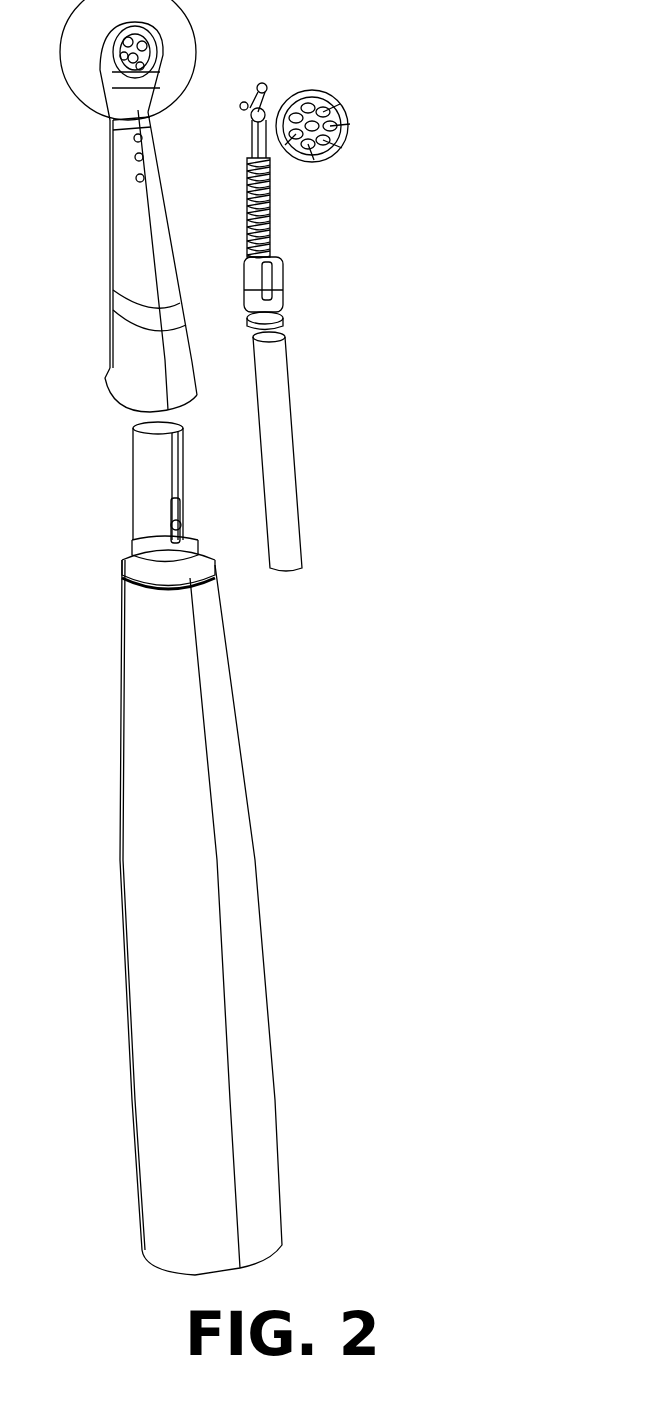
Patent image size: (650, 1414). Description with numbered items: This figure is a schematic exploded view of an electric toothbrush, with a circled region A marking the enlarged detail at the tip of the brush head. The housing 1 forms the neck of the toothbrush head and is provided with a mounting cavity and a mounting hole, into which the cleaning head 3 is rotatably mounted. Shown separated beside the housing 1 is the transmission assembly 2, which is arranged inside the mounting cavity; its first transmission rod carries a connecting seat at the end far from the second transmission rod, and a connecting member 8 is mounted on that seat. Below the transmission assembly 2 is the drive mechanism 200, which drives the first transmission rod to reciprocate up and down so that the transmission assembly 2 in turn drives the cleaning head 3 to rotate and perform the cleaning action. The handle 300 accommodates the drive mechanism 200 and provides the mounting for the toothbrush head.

The enlarged detail region A is at (197, 57).
The housing 1 is at (130, 258).
The transmission assembly 2 is at (272, 213).
The cleaning head 3 is at (353, 127).
The connecting member 8 is at (285, 298).
The drive mechanism 200 is at (278, 447).
The handle 300 is at (218, 668).